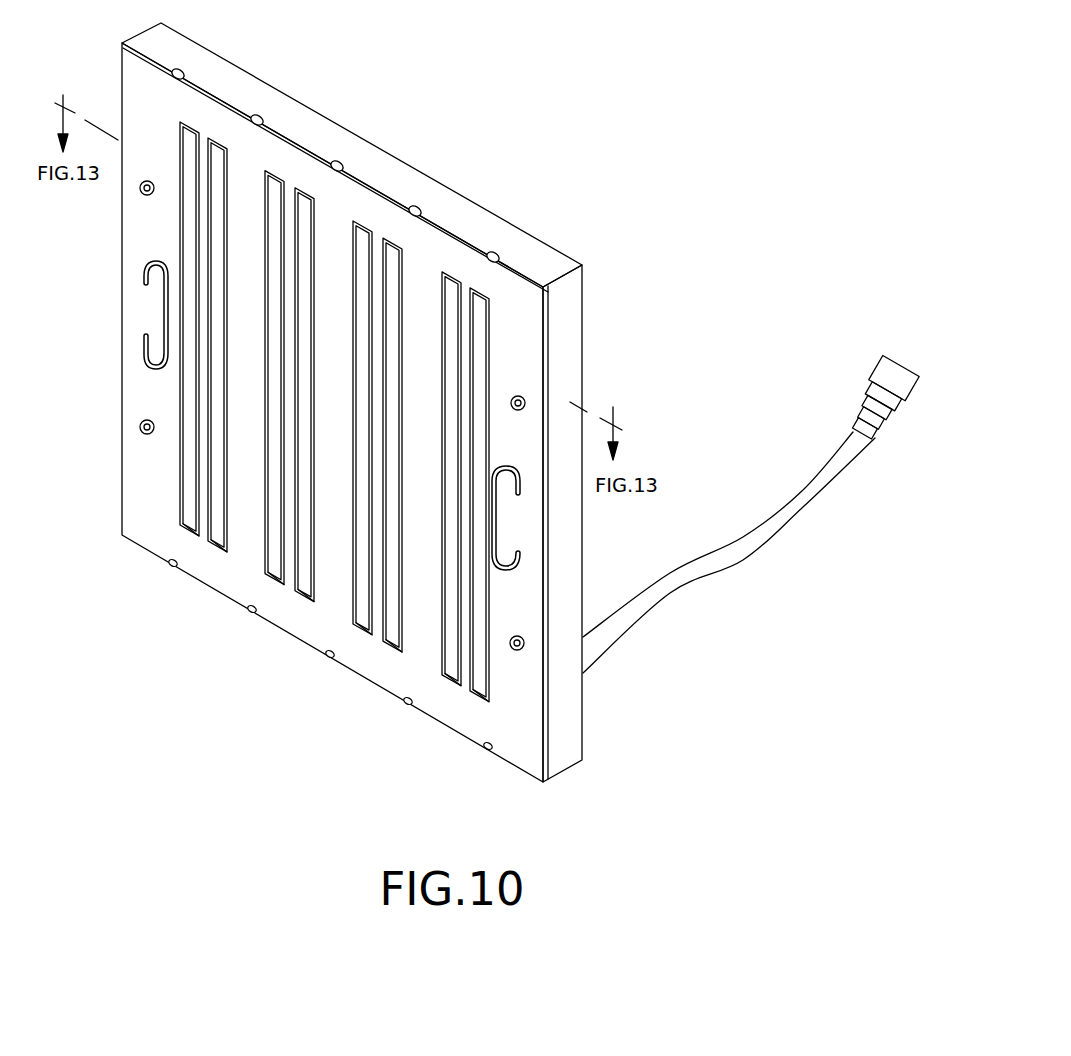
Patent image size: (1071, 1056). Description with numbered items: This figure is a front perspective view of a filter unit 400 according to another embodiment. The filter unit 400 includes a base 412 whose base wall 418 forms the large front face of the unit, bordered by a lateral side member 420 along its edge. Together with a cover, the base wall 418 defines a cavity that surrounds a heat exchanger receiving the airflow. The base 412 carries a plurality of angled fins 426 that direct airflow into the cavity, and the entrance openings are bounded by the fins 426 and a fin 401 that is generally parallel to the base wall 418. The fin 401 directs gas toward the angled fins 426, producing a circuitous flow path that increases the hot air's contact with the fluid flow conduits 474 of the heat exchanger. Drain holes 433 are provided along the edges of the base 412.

The filter unit 400 is at (520, 408).
The base 412 is at (578, 312).
The base wall 418 is at (515, 302).
The lateral side member 420 is at (452, 208).
The drain hole 433 is at (257, 122).
The fluid flow conduit 474 is at (220, 548).
The fin 401 is at (288, 575).
The fin 426 is at (365, 618).